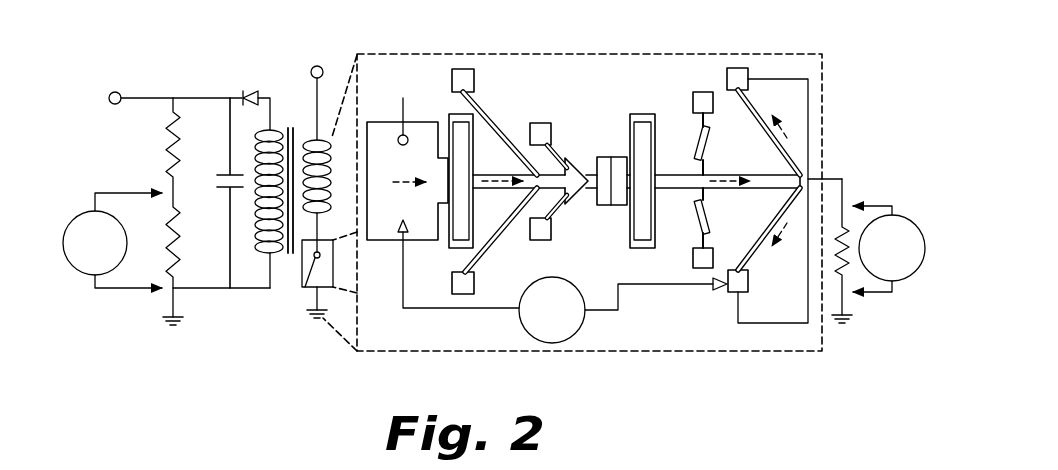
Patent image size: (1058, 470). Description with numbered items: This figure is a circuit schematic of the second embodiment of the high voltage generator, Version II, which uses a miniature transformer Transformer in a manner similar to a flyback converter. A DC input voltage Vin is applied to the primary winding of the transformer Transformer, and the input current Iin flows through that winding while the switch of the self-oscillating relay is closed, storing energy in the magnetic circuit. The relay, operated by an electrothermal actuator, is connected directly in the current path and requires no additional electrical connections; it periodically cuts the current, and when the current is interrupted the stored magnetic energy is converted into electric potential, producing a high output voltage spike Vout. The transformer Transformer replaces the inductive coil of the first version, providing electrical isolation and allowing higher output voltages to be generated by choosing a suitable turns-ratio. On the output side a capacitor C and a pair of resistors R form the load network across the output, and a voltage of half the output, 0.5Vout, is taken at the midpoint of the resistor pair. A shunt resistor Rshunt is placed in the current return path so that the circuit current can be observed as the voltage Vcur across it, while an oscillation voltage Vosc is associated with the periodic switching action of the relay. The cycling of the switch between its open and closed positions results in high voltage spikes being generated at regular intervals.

The output voltage Vout is at (167, 83).
The input voltage Vin is at (273, 98).
The resistor R is at (163, 211).
The capacitor C is at (225, 193).
The half output voltage measurement point 0.5Vout is at (166, 240).
The miniature transformer Transformer is at (289, 270).
The input current Iin is at (571, 165).
The oscillation voltage Vosc is at (623, 310).
The current-measuring voltage Vcur is at (889, 249).
The shunt resistor Rshunt is at (856, 281).